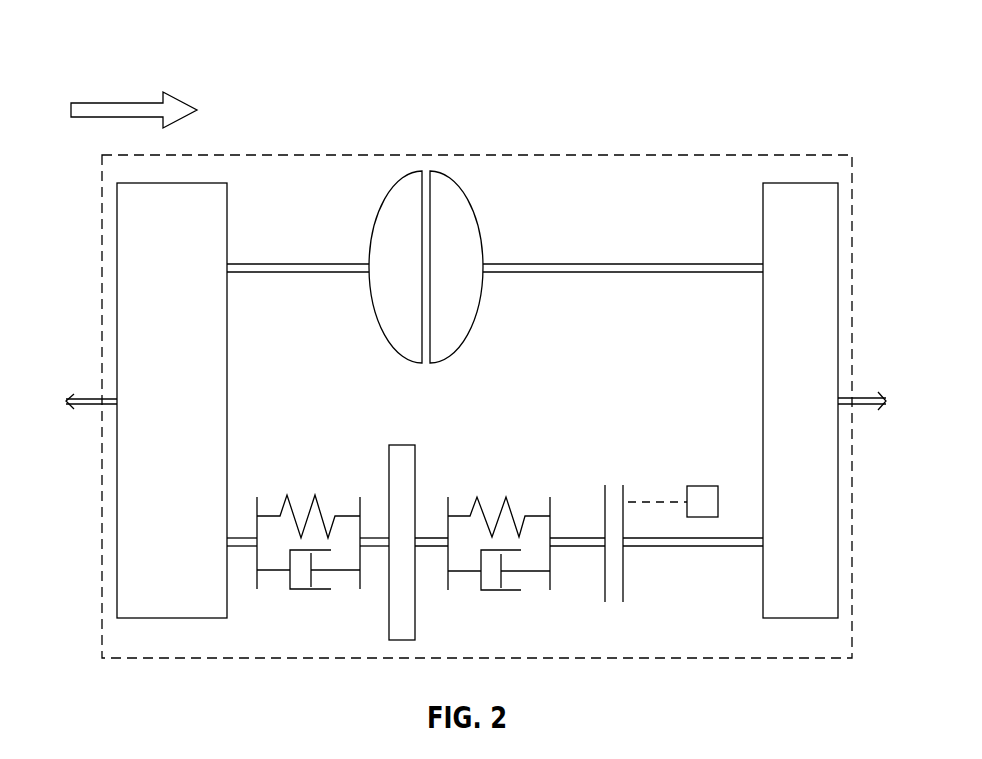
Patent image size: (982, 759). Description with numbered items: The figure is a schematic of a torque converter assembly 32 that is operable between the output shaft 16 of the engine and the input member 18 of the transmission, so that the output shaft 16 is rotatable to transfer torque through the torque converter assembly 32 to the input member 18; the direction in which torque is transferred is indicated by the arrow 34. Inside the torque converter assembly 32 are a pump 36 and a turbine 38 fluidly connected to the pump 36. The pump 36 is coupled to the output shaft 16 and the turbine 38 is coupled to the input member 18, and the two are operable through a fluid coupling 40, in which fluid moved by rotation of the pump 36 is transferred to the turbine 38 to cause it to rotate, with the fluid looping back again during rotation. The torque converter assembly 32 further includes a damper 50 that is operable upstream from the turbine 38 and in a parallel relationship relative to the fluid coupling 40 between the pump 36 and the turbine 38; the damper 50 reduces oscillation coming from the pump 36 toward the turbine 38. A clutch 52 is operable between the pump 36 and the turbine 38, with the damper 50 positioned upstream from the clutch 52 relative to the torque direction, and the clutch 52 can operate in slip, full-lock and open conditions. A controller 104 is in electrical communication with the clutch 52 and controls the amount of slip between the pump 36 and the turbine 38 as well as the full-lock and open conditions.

The arrow 34 is at (113, 102).
The torque converter assembly 32 is at (513, 153).
The pump 36 is at (158, 414).
The turbine 38 is at (785, 414).
The output shaft 16 is at (88, 397).
The input member 18 is at (862, 397).
The fluid coupling 40 is at (500, 224).
The damper 50 is at (432, 488).
The clutch 52 is at (614, 476).
The controller 104 is at (702, 486).